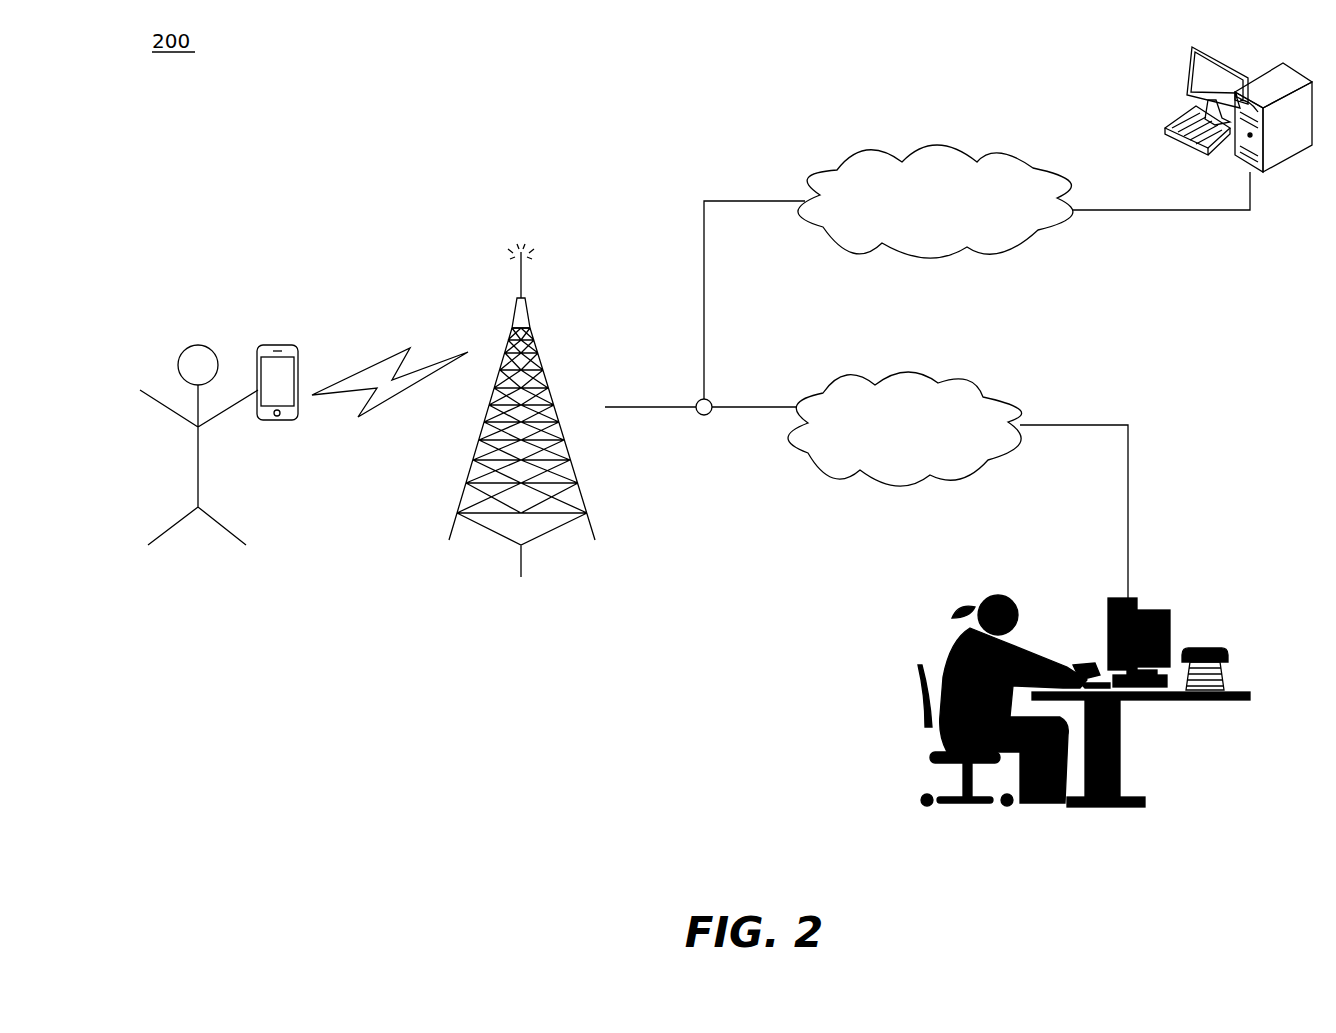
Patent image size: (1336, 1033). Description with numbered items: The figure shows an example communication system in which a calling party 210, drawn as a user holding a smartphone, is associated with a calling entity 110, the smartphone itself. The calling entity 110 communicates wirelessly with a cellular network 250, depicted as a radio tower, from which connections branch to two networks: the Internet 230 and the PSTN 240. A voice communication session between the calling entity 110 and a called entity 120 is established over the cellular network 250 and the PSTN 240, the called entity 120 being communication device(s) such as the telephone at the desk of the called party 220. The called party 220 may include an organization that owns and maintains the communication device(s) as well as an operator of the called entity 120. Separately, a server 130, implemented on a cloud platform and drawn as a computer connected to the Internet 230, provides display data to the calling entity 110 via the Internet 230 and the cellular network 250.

The calling party 210 is at (159, 355).
The calling entity 110 is at (307, 331).
The cellular network 250 is at (566, 280).
The Internet 230 is at (920, 222).
The PSTN 240 is at (890, 448).
The server 130 is at (1157, 75).
The called party 220 is at (927, 619).
The called entity 120 is at (1195, 614).